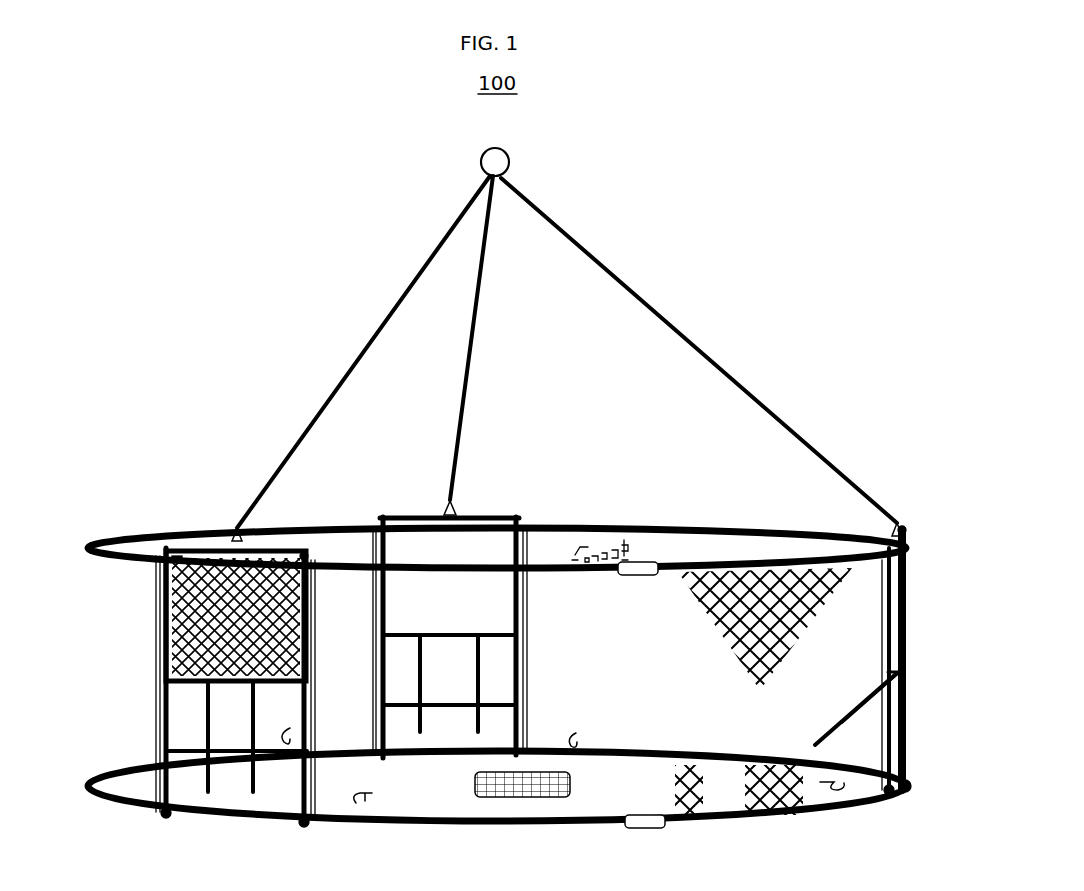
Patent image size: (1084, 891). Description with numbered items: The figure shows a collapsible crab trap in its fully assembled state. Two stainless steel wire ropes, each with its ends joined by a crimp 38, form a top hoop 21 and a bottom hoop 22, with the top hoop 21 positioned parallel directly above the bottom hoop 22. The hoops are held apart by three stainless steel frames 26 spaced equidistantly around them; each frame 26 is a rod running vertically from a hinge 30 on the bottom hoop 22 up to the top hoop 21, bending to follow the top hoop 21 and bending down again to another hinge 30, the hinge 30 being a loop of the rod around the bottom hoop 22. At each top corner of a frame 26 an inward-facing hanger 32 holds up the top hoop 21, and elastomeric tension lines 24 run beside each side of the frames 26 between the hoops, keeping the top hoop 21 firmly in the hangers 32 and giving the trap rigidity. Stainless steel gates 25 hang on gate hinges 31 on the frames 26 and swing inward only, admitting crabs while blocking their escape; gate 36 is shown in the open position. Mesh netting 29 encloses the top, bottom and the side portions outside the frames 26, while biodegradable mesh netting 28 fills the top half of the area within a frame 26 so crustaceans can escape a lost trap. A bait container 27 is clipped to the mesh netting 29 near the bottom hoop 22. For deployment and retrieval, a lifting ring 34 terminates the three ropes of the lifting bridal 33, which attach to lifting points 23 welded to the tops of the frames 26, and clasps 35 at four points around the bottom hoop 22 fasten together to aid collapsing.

The top hoop 21 is at (105, 538).
The bottom hoop 22 is at (110, 803).
The lifting points 23 is at (456, 503).
The elastomeric tension lines 24 is at (157, 728).
The gates 25 is at (480, 675).
The frames 26 is at (518, 608).
The bait container 27 is at (575, 784).
The biodegradable mesh netting 28 is at (244, 637).
The mesh netting 29 is at (612, 557).
The hinge 30 is at (168, 815).
The gate hinges 31 is at (165, 681).
The hanger 32 is at (172, 550).
The lifting bridal 33 is at (657, 303).
The lifting ring 34 is at (512, 162).
The clasps 35 is at (283, 742).
The gate 36 is at (840, 720).
The crimp 38 is at (647, 580).